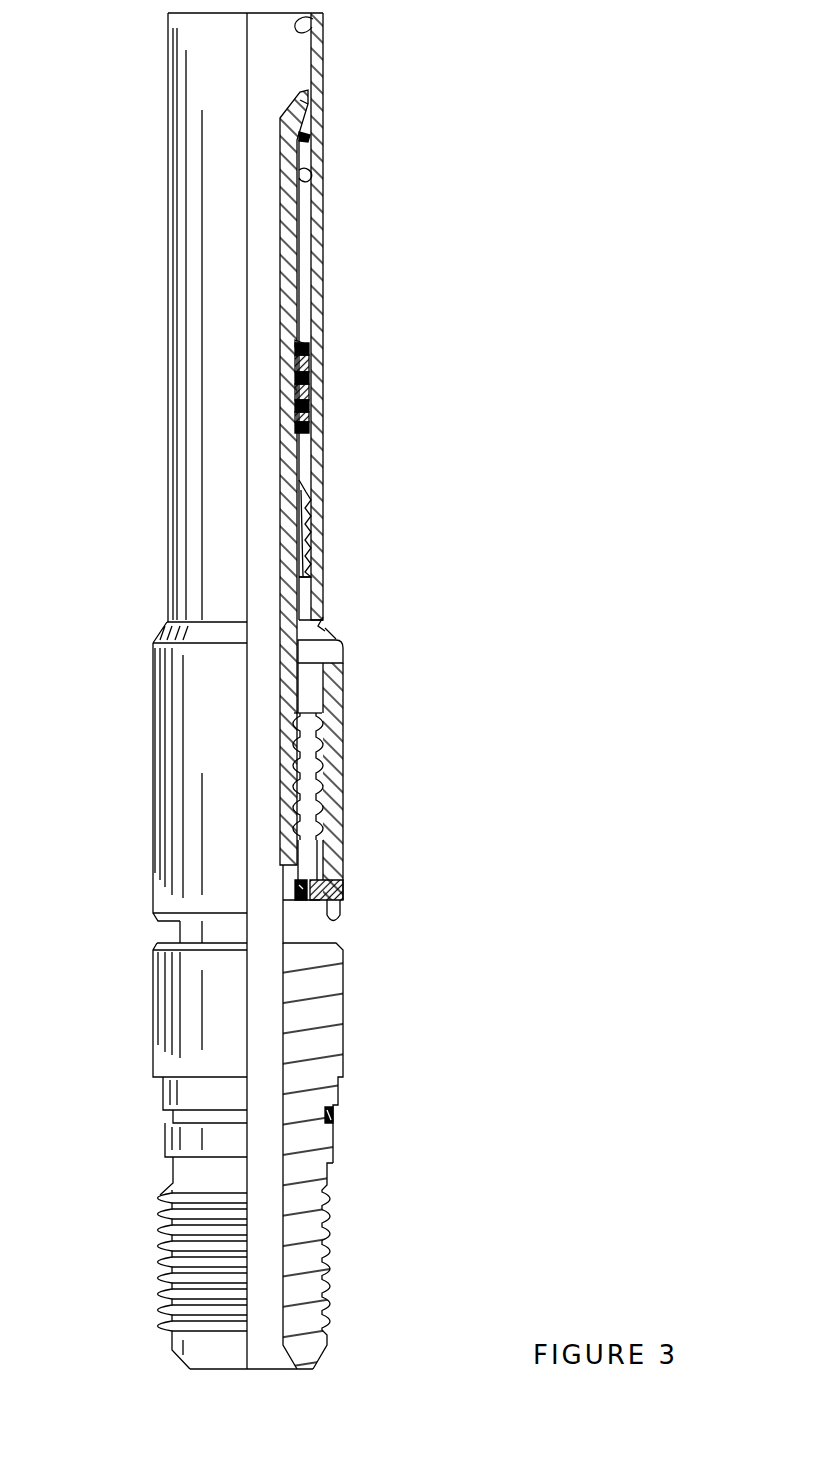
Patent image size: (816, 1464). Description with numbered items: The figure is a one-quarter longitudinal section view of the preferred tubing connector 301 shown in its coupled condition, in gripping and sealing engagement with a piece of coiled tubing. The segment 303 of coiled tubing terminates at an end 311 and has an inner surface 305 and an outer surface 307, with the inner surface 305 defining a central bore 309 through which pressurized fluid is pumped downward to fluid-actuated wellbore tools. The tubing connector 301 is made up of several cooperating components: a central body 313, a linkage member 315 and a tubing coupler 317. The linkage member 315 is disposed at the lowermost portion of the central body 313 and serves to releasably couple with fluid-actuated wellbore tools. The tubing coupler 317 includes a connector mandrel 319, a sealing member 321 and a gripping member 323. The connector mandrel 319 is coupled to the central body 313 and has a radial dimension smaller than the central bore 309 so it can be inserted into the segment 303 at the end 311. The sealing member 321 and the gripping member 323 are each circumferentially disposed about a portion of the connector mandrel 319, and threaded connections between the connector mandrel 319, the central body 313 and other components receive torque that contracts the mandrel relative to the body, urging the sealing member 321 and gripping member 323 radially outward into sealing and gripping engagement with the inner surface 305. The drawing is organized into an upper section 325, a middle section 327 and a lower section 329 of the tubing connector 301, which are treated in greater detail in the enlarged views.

The tubing connector 301 is at (400, 387).
The segment of coiled tubing 303 is at (318, 70).
The inner surface 305 is at (305, 180).
The outer surface 307 is at (322, 141).
The central bore 309 is at (318, 17).
The end 311 is at (336, 635).
The central body 313 is at (315, 1015).
The linkage member 315 is at (354, 1286).
The tubing coupler 317 is at (350, 461).
The connector mandrel 319 is at (298, 249).
The sealing member 321 is at (325, 377).
The gripping member 323 is at (320, 512).
The upper section 325 is at (220, 508).
The middle section 327 is at (218, 808).
The lower section 329 is at (210, 1040).